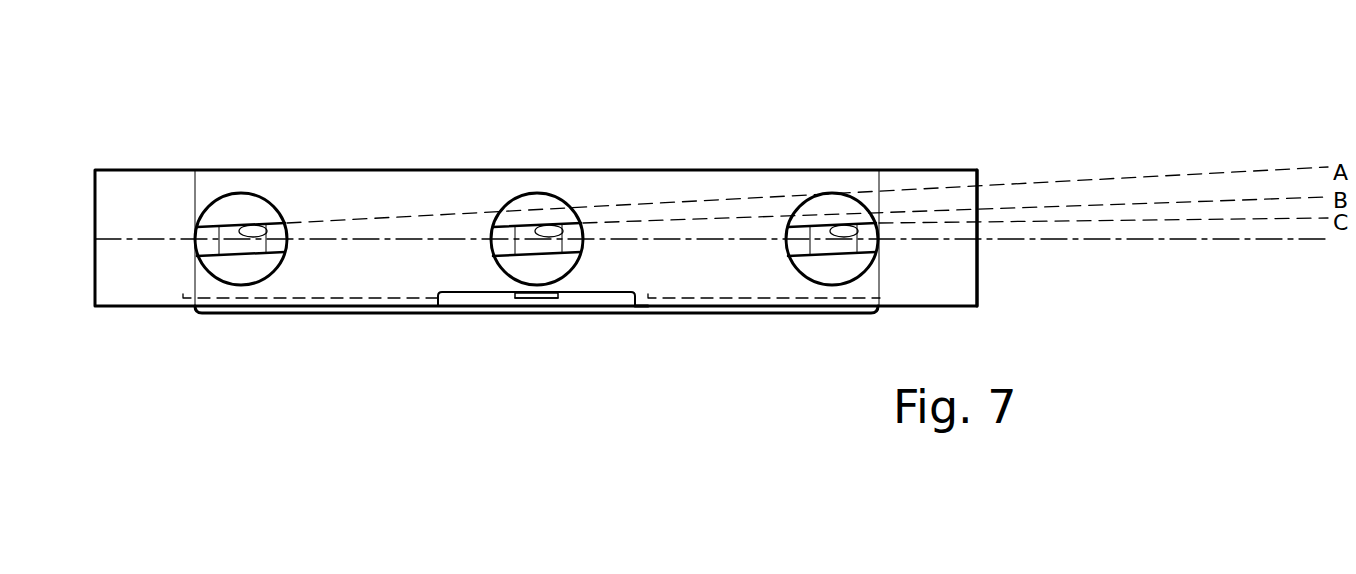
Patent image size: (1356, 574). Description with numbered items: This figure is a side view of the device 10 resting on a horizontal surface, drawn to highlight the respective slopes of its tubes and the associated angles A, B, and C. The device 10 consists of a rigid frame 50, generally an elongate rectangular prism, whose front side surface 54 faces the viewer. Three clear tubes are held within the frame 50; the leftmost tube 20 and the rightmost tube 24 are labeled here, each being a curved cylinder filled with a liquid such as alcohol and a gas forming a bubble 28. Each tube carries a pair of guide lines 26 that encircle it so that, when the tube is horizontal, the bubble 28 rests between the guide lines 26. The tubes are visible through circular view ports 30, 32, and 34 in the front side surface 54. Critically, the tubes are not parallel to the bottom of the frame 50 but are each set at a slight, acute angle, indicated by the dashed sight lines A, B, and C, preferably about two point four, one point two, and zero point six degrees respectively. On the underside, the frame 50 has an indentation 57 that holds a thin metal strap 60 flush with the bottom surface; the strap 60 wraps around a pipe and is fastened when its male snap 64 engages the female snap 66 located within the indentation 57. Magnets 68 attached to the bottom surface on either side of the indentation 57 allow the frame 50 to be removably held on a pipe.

The device 10 is at (91, 136).
The tube 20 is at (292, 188).
The tube 24 is at (752, 171).
The guide lines 26 is at (226, 232).
The bubble 28 is at (253, 228).
The view port 30 is at (222, 208).
The view port 32 is at (527, 198).
The view port 34 is at (812, 213).
The frame 50 is at (890, 160).
The front side surface 54 is at (948, 278).
The indentation 57 is at (641, 307).
The strap 60 is at (538, 334).
The male snap 64 is at (555, 300).
The female snap 66 is at (558, 296).
The magnets 68 is at (262, 289).